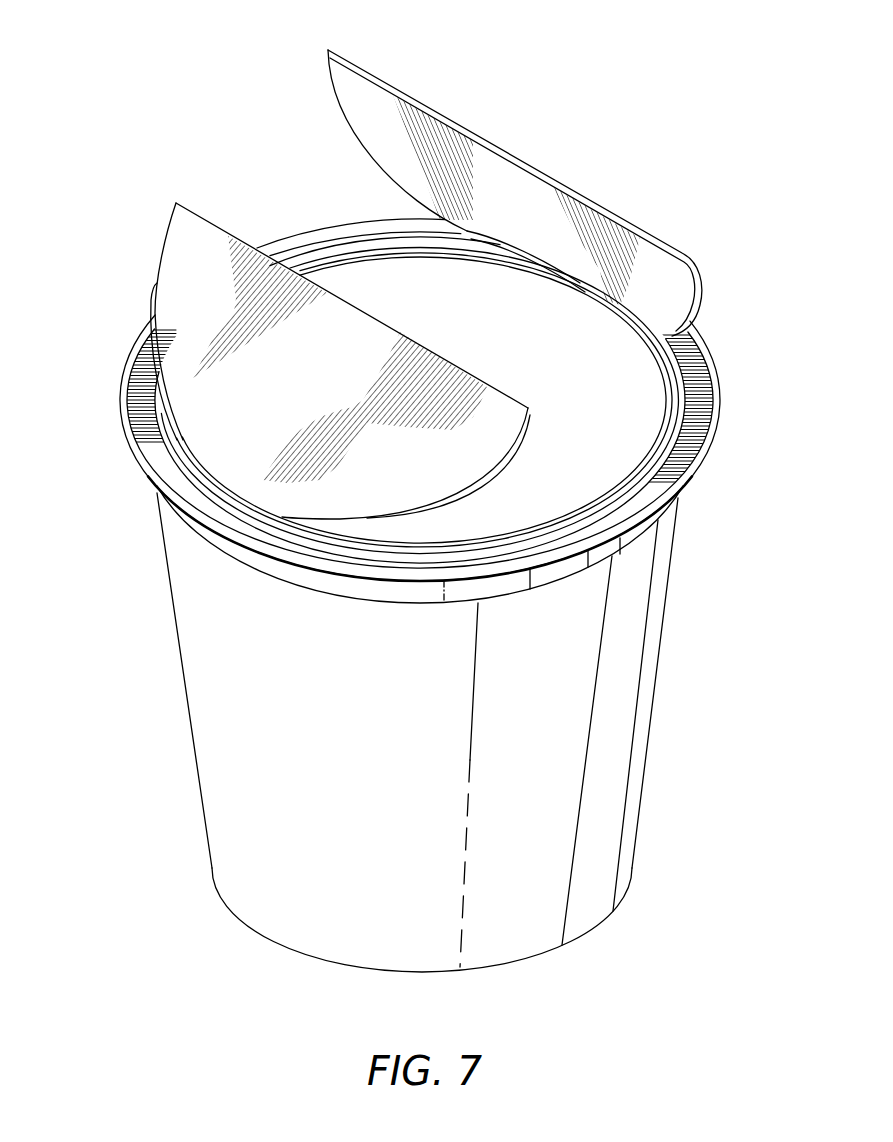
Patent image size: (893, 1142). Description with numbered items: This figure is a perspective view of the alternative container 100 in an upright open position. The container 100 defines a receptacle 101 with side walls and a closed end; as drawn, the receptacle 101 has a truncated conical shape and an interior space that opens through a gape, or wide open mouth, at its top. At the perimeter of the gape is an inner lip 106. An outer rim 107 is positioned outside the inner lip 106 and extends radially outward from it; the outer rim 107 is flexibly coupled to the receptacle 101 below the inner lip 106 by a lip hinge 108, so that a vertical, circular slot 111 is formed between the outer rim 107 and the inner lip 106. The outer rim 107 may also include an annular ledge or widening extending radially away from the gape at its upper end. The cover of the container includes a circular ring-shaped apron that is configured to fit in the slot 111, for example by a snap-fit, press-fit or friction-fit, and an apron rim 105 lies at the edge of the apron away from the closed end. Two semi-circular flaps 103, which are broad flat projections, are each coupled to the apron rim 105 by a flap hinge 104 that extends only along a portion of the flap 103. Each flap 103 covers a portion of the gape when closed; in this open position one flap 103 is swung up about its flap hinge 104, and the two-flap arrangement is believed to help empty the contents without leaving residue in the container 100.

The alternative container 100 is at (624, 112).
The receptacle 101 is at (657, 645).
The flaps 103 is at (387, 79).
The flap hinge 104 is at (205, 461).
The apron rim 105 is at (678, 377).
The inner lip 106 is at (355, 257).
The outer rim 107 is at (700, 400).
The lip hinge 108 is at (363, 600).
The slot 111 is at (518, 525).